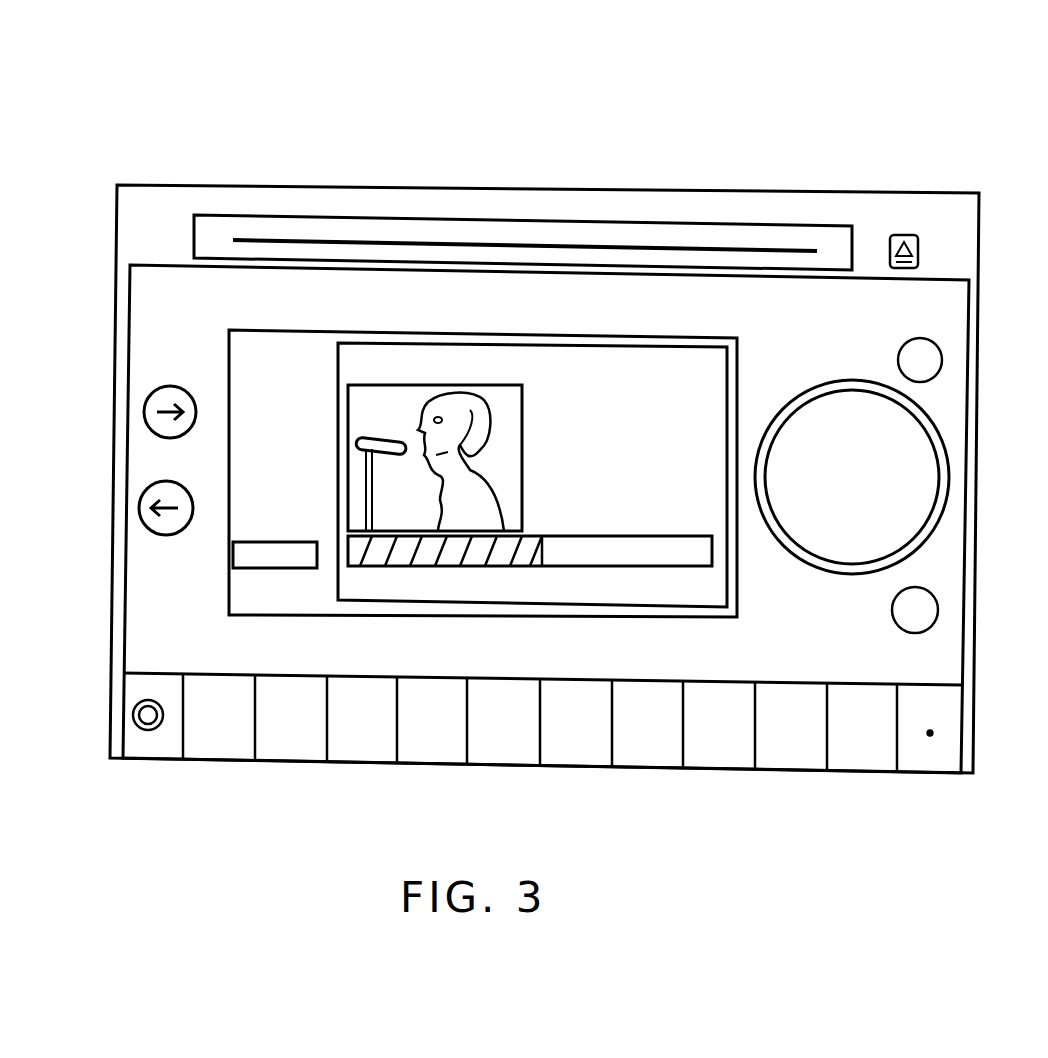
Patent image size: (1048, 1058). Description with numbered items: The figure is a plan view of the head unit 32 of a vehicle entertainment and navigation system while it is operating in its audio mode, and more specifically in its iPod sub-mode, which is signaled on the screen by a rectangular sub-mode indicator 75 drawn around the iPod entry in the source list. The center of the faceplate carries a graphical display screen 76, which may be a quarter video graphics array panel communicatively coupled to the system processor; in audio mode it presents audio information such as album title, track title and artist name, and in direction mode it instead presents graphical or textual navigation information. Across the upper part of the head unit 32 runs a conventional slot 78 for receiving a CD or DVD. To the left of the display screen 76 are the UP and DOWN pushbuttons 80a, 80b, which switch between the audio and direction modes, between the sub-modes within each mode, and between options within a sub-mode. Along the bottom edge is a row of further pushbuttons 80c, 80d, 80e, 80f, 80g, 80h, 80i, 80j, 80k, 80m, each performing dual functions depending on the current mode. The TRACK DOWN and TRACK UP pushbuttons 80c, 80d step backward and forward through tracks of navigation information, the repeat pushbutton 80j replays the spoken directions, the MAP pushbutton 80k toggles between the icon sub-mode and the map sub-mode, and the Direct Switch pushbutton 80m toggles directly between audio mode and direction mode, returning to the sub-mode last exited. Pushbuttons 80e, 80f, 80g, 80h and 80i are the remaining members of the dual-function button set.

The head unit 32 is at (897, 118).
The slot 78 is at (400, 245).
The graphical display screen 76 is at (533, 332).
The rectangular sub-mode indicator 75 is at (228, 553).
The UP pushbutton 80a is at (144, 408).
The DOWN pushbutton 80b is at (139, 505).
The TRACK DOWN pushbutton 80c is at (218, 746).
The TRACK UP pushbutton 80d is at (290, 746).
The pushbutton 80e is at (367, 746).
The pushbutton 80f is at (440, 746).
The pushbutton 80g is at (515, 746).
The pushbutton 80h is at (585, 746).
The pushbutton 80i is at (658, 746).
The repeat pushbutton 80j is at (728, 746).
The MAP pushbutton 80k is at (800, 746).
The Direct Switch pushbutton 80m is at (873, 746).